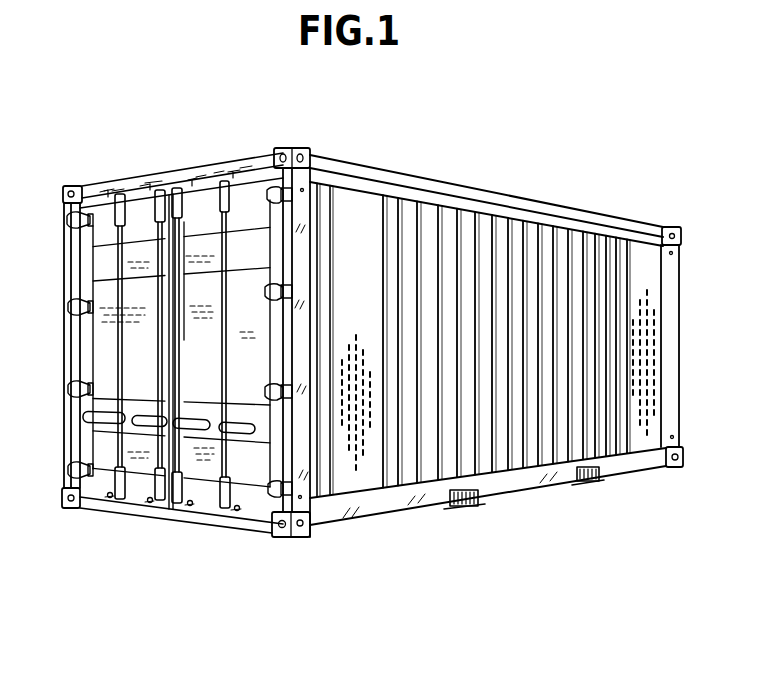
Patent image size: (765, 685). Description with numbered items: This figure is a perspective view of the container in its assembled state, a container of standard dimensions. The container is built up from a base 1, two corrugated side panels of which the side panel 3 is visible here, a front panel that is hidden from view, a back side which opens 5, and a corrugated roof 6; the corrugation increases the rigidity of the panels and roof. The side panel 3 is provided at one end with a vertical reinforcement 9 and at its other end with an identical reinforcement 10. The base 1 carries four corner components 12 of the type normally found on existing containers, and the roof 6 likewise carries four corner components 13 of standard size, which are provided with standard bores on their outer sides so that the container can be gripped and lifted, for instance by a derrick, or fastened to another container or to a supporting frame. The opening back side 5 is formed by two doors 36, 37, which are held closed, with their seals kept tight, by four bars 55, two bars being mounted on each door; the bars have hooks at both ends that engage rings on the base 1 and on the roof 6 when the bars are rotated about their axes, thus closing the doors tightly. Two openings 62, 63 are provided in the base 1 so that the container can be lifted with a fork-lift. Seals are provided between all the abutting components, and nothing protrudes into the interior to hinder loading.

The base 1 is at (375, 508).
The side panel 3 is at (470, 252).
The back side which opens 5 is at (86, 372).
The roof 6 is at (372, 176).
The reinforcement 9 is at (297, 350).
The reinforcement 10 is at (672, 353).
The corner component 12 is at (66, 510).
The corner component 13 is at (72, 187).
The door 36 is at (67, 323).
The door 37 is at (254, 323).
The bar 55 is at (120, 363).
The opening 62 is at (455, 509).
The opening 63 is at (583, 485).